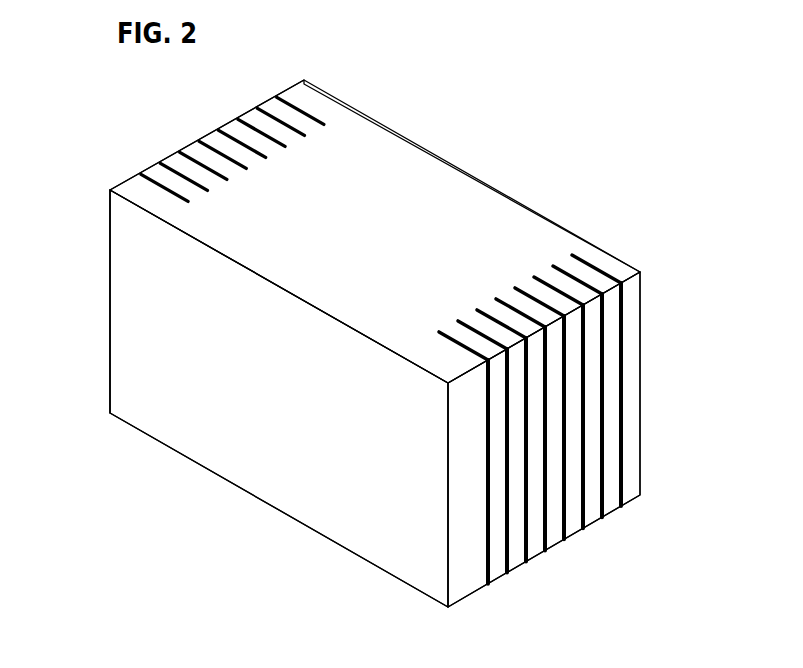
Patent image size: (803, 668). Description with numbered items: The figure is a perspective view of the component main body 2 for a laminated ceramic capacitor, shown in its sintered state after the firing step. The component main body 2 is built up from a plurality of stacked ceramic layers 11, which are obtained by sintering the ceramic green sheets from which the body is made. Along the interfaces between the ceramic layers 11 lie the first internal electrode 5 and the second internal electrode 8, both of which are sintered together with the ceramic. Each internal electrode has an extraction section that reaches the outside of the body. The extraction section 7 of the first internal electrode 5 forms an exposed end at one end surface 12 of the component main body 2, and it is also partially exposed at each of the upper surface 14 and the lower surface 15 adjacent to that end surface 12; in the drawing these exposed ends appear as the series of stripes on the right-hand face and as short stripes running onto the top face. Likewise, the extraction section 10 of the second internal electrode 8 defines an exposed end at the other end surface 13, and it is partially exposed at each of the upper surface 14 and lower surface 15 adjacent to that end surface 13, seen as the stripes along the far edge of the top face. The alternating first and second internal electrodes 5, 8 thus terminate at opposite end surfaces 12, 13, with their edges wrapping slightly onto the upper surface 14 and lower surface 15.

The component main body 2 is at (608, 85).
The first internal electrode 5 is at (607, 372).
The extraction section of the first internal electrode 7 is at (572, 275).
The second internal electrode 8 is at (172, 177).
The extraction section of the second internal electrode 10 is at (283, 118).
The ceramic layers 11 is at (532, 547).
The end surface 12 is at (632, 428).
The end surface 13 is at (135, 318).
The upper surface 14 is at (425, 165).
The lower surface 15 is at (327, 503).